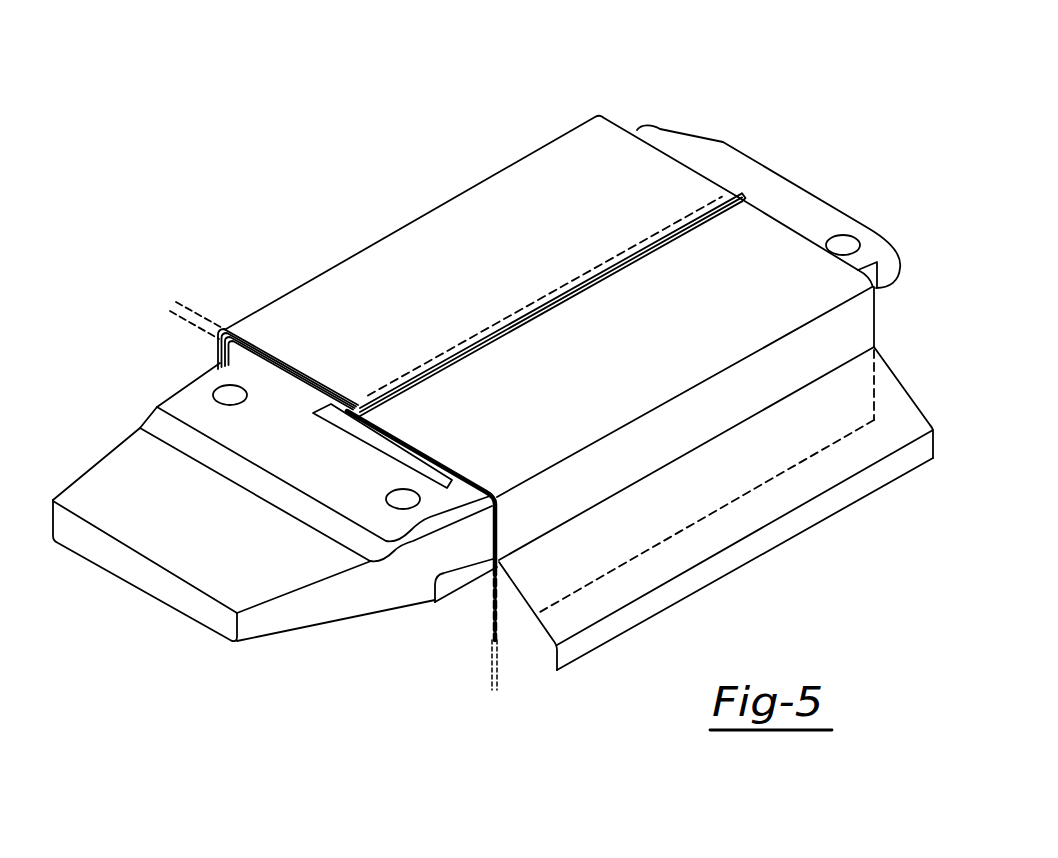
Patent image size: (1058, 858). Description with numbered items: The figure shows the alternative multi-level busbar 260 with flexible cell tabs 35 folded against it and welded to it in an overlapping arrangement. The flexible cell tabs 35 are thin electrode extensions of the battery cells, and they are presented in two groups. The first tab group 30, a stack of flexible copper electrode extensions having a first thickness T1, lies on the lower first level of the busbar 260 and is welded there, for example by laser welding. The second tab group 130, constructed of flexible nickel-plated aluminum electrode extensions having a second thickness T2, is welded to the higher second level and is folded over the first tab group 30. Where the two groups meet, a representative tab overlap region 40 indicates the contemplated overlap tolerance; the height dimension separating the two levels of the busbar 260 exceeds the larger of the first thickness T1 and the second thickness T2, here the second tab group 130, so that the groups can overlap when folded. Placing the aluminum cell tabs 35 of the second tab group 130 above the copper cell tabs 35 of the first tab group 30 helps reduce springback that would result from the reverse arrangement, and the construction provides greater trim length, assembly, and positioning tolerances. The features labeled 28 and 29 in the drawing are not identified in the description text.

The multi-level busbar 260 is at (117, 322).
The second tab group 130 is at (485, 276).
The tab overlap region 40 is at (741, 193).
The first tab group 30 is at (633, 362).
The base bracket 28 is at (201, 538).
The mounting holes 29 is at (233, 392).
The flexible cell tabs 35 is at (500, 718).
The first thickness T1 is at (537, 697).
The second thickness T2 is at (235, 289).